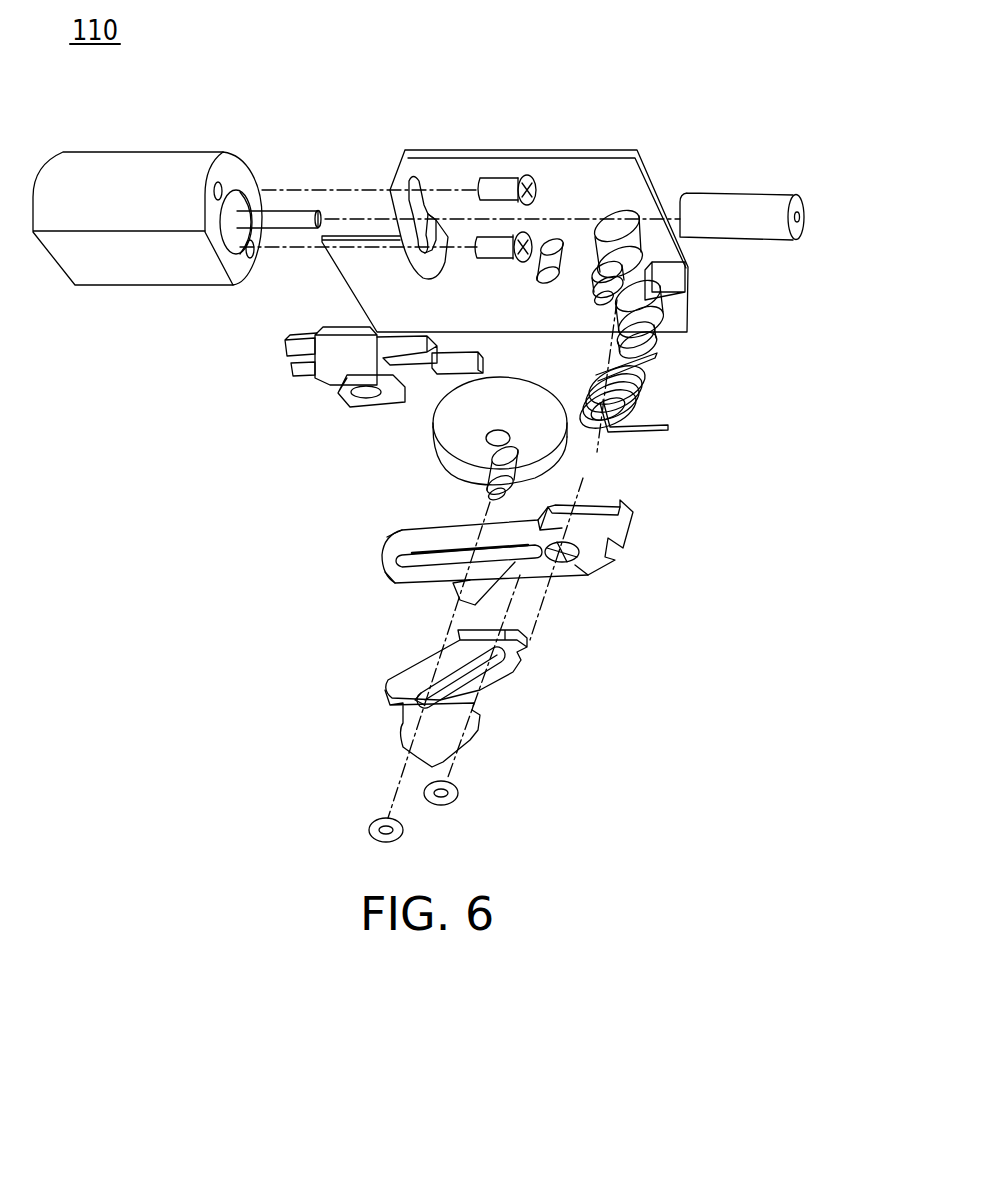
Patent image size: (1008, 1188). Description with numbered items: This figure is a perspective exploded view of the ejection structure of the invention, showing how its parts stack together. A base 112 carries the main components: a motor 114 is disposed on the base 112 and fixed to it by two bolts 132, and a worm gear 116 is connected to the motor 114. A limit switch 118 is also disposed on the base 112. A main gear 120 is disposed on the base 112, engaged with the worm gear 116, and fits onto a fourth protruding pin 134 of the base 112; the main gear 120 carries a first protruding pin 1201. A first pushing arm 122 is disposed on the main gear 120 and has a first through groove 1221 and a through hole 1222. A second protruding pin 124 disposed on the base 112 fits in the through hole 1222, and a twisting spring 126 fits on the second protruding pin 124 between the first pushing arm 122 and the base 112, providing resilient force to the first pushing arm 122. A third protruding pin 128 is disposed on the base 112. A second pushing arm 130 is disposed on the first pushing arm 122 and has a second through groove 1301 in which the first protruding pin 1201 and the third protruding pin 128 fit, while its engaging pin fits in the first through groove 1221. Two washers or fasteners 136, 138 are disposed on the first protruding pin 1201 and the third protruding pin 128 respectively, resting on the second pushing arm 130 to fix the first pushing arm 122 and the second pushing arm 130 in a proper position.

The base 112 is at (445, 175).
The motor 114 is at (135, 165).
The worm gear 116 is at (752, 215).
The limit switch 118 is at (312, 350).
The main gear 120 is at (443, 445).
The first protruding pin 1201 is at (490, 490).
The first pushing arm 122 is at (502, 546).
The first through groove 1221 is at (402, 567).
The through hole 1222 is at (570, 557).
The second protruding pin 124 is at (652, 312).
The twisting spring 126 is at (648, 403).
The third protruding pin 128 is at (620, 240).
The second pushing arm 130 is at (481, 680).
The second through groove 1301 is at (393, 703).
The bolts 132 is at (480, 237).
The fourth protruding pin 134 is at (547, 244).
The washer or fastener 136 is at (370, 830).
The washer or fastener 138 is at (460, 793).